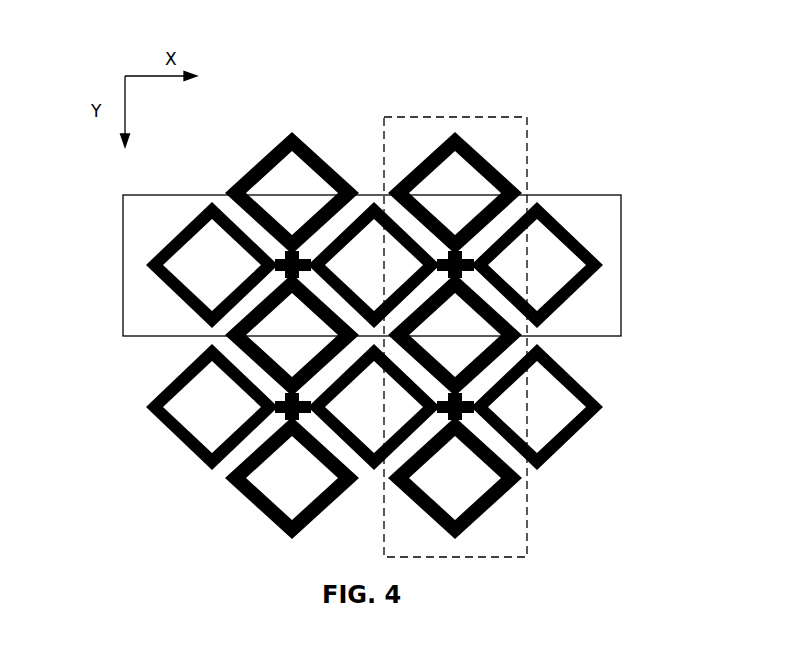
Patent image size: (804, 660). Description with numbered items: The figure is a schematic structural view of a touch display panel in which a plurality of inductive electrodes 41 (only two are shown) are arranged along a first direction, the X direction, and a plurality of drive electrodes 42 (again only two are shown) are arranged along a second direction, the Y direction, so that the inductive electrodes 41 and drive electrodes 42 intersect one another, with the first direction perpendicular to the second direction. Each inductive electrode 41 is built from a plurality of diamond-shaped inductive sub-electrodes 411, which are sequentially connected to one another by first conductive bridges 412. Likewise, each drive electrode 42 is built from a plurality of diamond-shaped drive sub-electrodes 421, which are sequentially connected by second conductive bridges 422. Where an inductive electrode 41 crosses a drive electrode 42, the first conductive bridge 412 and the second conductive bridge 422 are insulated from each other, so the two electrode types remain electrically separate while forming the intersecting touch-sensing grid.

The inductive electrode 41 is at (453, 117).
The inductive sub-electrode 411 is at (480, 152).
The first conductive bridge 412 is at (458, 252).
The drive electrode 42 is at (124, 266).
The drive sub-electrode 421 is at (603, 263).
The second conductive bridge 422 is at (462, 263).